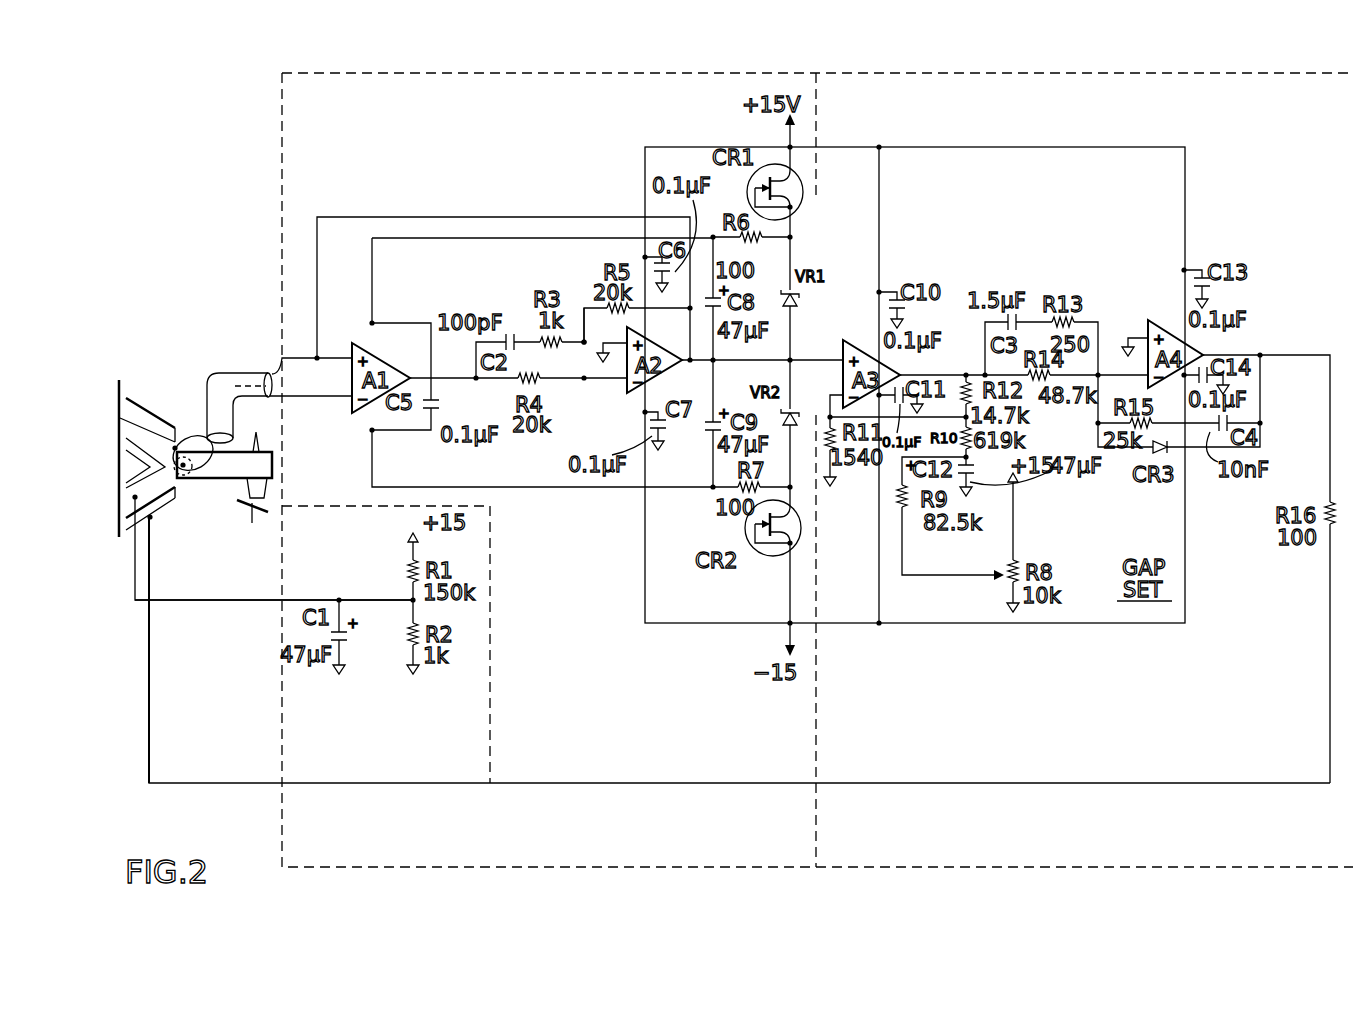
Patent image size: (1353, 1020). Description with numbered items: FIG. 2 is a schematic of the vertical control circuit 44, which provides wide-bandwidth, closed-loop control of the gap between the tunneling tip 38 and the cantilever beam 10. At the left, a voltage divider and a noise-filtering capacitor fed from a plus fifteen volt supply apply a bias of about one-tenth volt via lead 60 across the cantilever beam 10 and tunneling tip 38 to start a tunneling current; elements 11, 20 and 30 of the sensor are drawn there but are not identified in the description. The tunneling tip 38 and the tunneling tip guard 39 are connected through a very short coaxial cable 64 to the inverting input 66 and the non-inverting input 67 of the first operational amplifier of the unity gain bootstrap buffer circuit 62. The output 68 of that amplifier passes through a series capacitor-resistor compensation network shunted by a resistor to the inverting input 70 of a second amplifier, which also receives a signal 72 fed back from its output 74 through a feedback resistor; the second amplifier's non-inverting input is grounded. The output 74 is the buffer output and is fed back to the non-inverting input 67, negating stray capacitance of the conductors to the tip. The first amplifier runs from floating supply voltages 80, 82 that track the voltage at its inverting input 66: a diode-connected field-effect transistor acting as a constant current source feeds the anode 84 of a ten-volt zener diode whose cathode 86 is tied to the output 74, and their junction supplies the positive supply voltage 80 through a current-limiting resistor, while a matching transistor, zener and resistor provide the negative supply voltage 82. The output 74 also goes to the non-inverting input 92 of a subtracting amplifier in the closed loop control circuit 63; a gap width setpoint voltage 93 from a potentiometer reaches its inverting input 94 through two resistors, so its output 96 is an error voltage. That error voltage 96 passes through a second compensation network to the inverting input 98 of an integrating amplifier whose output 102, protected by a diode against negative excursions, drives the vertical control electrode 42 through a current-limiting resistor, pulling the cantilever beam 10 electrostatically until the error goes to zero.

The cantilever beam 10 is at (192, 502).
The workpiece surface 11 is at (119, 382).
The electrode tip 20 is at (248, 505).
The nozzle body 30 is at (275, 497).
The tunneling tip 38 is at (200, 440).
The tunneling tip guard 39 is at (192, 482).
The vertical control electrode 42 is at (128, 533).
The vertical control circuit 44 is at (822, 878).
The lead 60 is at (190, 600).
The unity gain bootstrap buffer circuit 62 is at (377, 867).
The closed loop control circuit 63 is at (1010, 867).
The coaxial cable 64 is at (213, 378).
The inverting input 66 is at (305, 397).
The non-inverting input 67 is at (317, 358).
The output 68 is at (428, 370).
The inverting input 70 is at (613, 390).
The signal 72 is at (583, 306).
The output 74 is at (688, 358).
The positive supply voltage 80 is at (372, 323).
The negative supply voltage 82 is at (372, 430).
The anode 84 is at (790, 260).
The cathode 86 is at (793, 343).
The non-inverting input 92 is at (815, 358).
The gap width setpoint voltage 93 is at (978, 578).
The inverting input 94 is at (830, 410).
The output 96 is at (945, 375).
The inverting input 98 is at (1105, 373).
The output 102 is at (1248, 353).